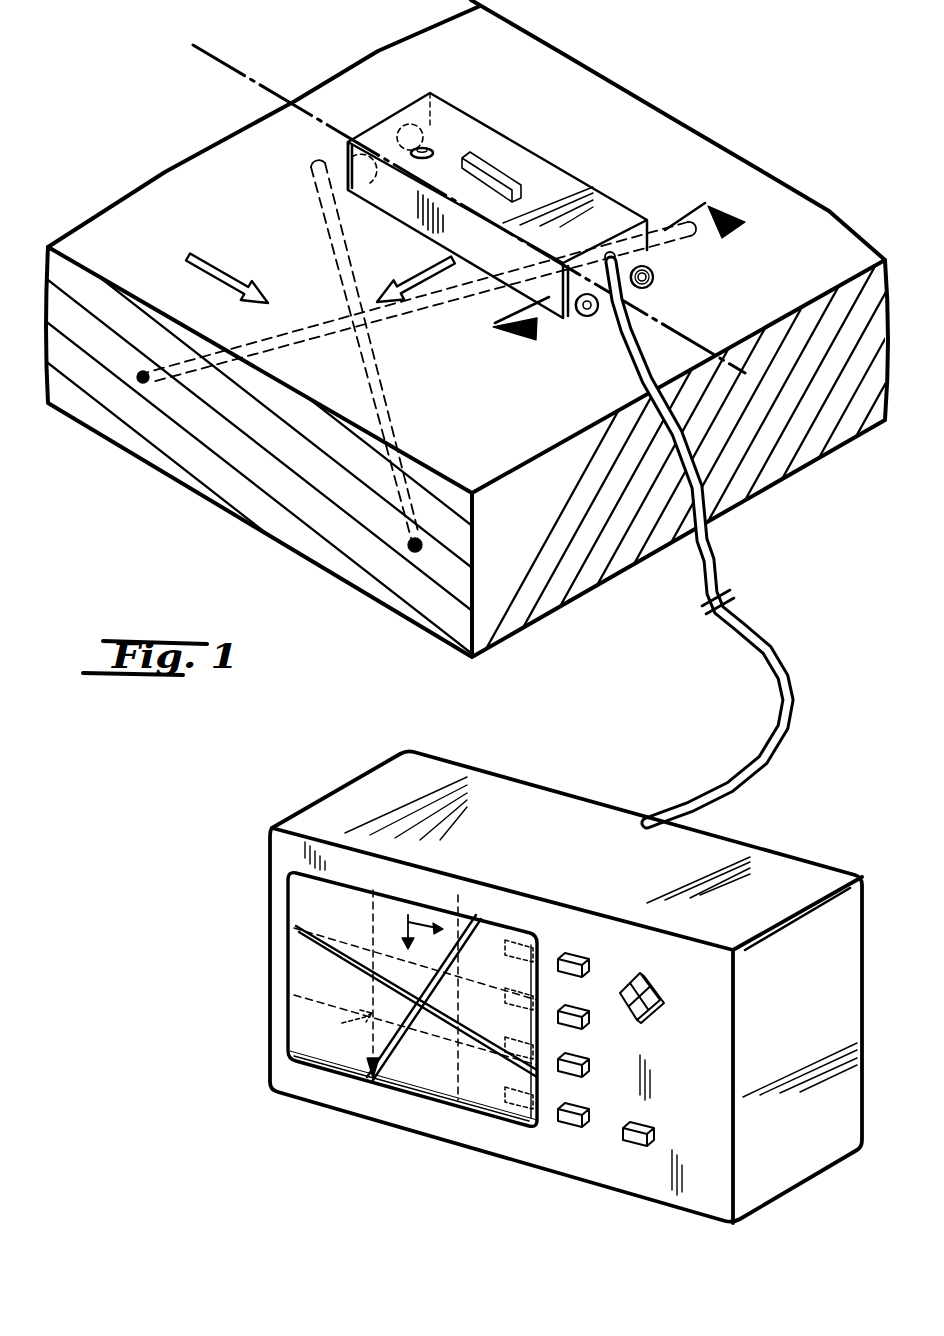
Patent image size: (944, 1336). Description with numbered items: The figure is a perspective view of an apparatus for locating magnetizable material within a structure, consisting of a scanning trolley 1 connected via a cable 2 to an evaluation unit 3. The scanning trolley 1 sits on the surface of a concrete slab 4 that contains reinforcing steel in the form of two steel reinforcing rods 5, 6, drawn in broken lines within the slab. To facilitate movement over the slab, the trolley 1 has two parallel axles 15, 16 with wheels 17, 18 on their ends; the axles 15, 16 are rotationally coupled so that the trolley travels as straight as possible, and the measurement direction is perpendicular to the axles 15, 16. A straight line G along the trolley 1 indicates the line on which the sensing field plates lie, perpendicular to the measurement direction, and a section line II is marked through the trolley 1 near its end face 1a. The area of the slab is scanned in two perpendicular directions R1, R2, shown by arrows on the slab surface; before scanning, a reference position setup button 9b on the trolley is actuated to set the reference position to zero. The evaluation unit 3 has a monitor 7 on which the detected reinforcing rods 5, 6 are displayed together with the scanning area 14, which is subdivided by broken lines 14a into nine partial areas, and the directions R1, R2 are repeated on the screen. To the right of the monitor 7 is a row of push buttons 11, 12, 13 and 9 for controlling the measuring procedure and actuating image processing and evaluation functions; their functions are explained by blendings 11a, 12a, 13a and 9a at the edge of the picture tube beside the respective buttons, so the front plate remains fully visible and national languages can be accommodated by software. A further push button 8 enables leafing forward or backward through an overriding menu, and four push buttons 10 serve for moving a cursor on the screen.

The scanning trolley 1 is at (571, 170).
The end face of test head housing 1a is at (382, 120).
The connecting cable 2 is at (737, 610).
The evaluation unit 3 is at (338, 788).
The concrete slab 4 is at (247, 500).
The steel reinforcing rod 5 is at (316, 205).
The steel reinforcing rod 6 is at (383, 408).
The monitor 7 is at (322, 898).
The push button 8 is at (637, 1143).
The push button 9 is at (573, 1120).
The blending 9a is at (515, 1108).
The reference position setup button 9b is at (429, 147).
The push buttons 10 is at (657, 1008).
The push button 11 is at (573, 958).
The blending 11a is at (514, 939).
The push button 12 is at (573, 1027).
The blending 12a is at (521, 990).
The push button 13 is at (573, 1074).
The blending 13a is at (520, 1040).
The scanning area 14 is at (333, 1058).
The broken lines 14a is at (339, 1026).
The wheel axle 15 is at (606, 272).
The wheel axle 16 is at (653, 285).
The wheel 17 is at (347, 170).
The wheel 18 is at (403, 133).
The straight line G is at (206, 52).
The first scanning direction R1 is at (414, 278).
The second scanning direction R2 is at (213, 262).
The section line II- II is at (607, 264).